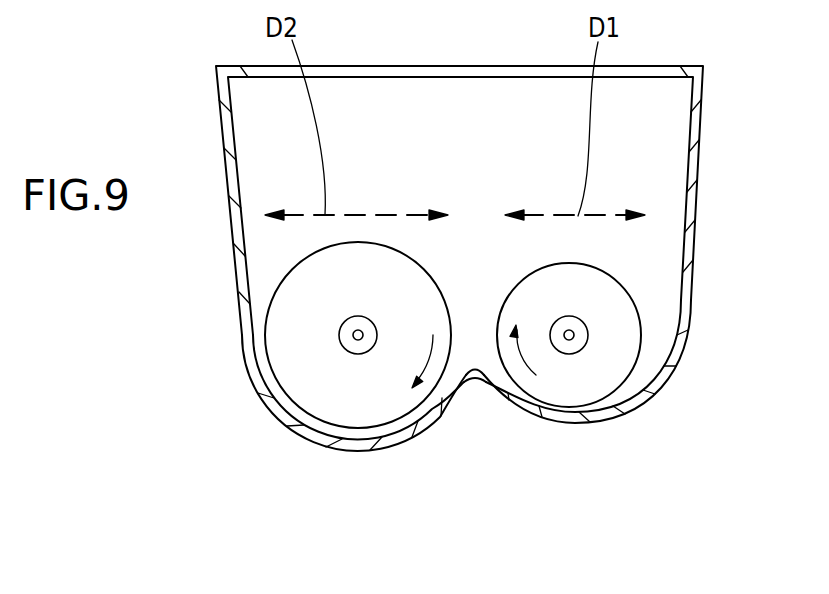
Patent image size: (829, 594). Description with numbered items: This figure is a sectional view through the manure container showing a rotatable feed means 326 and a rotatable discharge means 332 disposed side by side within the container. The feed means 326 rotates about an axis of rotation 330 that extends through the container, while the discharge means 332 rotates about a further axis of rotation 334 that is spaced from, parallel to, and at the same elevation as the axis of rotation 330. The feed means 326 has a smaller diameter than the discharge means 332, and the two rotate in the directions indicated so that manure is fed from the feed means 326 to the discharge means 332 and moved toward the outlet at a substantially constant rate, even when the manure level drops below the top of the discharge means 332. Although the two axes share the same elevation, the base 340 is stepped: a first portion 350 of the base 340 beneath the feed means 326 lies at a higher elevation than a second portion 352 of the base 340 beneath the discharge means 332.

The feed means 326 is at (588, 330).
The axis of rotation 330 is at (574, 338).
The discharge means 332 is at (342, 331).
The further axis of rotation 334 is at (356, 346).
The base 340 is at (475, 418).
The first portion 350 is at (585, 422).
The second portion 352 is at (330, 449).